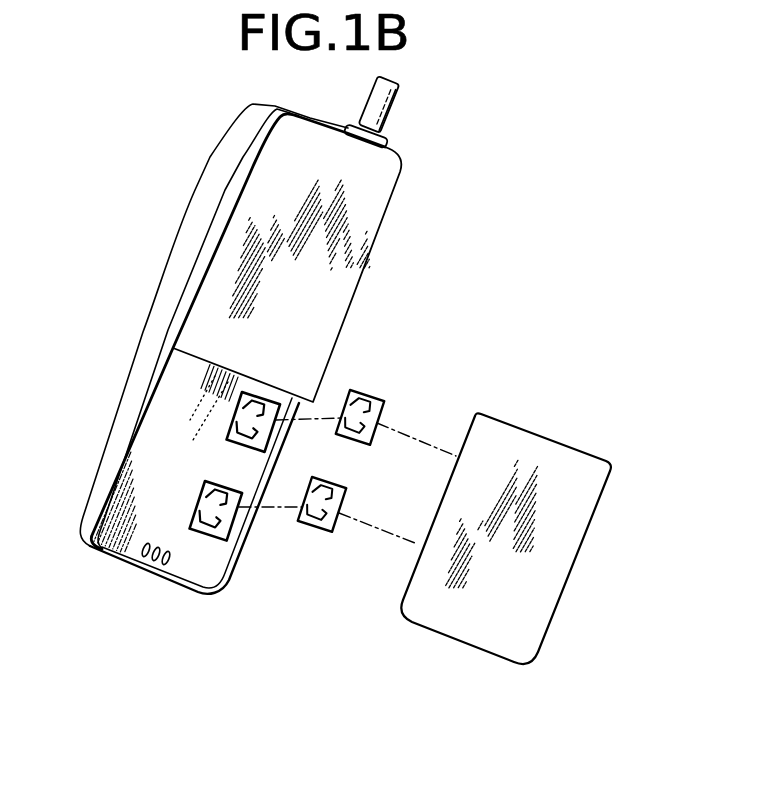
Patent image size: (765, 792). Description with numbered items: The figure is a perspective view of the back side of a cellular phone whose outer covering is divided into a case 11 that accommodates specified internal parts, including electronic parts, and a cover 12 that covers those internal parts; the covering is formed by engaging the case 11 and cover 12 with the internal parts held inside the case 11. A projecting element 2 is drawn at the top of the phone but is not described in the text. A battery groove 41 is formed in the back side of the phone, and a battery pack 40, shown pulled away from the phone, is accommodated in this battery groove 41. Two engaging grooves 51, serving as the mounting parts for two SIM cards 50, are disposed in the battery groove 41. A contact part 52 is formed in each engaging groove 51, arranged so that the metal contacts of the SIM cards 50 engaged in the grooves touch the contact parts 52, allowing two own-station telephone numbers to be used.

The antenna 2 is at (389, 84).
The case 11 is at (374, 206).
The cover 12 is at (206, 171).
The battery pack 40 is at (563, 456).
The battery groove 41 is at (150, 458).
The SIM card 50 is at (380, 400).
The engaging groove 51 is at (256, 410).
The contact part 52 is at (260, 422).